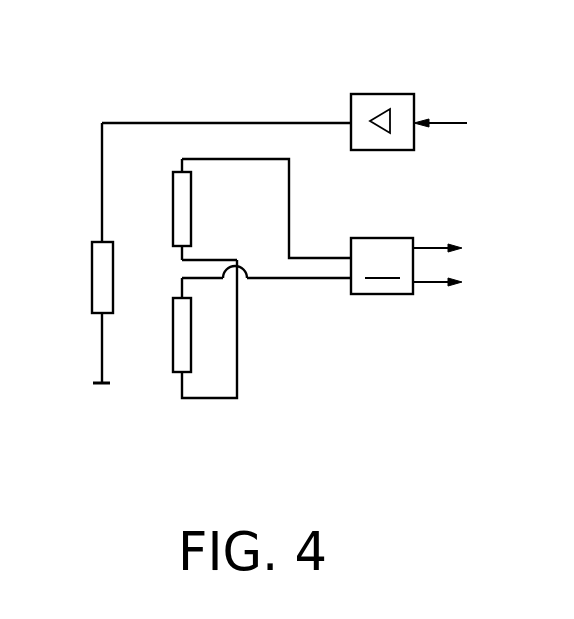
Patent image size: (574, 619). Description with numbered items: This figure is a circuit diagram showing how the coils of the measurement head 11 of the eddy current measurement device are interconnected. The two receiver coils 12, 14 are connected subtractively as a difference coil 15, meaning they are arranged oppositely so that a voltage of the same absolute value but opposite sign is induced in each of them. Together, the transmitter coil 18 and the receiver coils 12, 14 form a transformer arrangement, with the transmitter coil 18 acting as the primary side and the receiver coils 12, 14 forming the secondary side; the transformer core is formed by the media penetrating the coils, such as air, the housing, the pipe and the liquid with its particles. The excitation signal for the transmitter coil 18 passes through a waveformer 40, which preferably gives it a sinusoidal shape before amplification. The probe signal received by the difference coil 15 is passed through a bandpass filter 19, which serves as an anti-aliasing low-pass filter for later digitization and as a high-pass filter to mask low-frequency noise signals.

The measurement head 11 is at (235, 262).
The receiver coil 12 is at (183, 197).
The receiver coil 14 is at (183, 352).
The difference coil 15 is at (160, 262).
The transmitter coil 18 is at (100, 290).
The bandpass filter 19 is at (383, 290).
The waveformer 40 is at (384, 94).